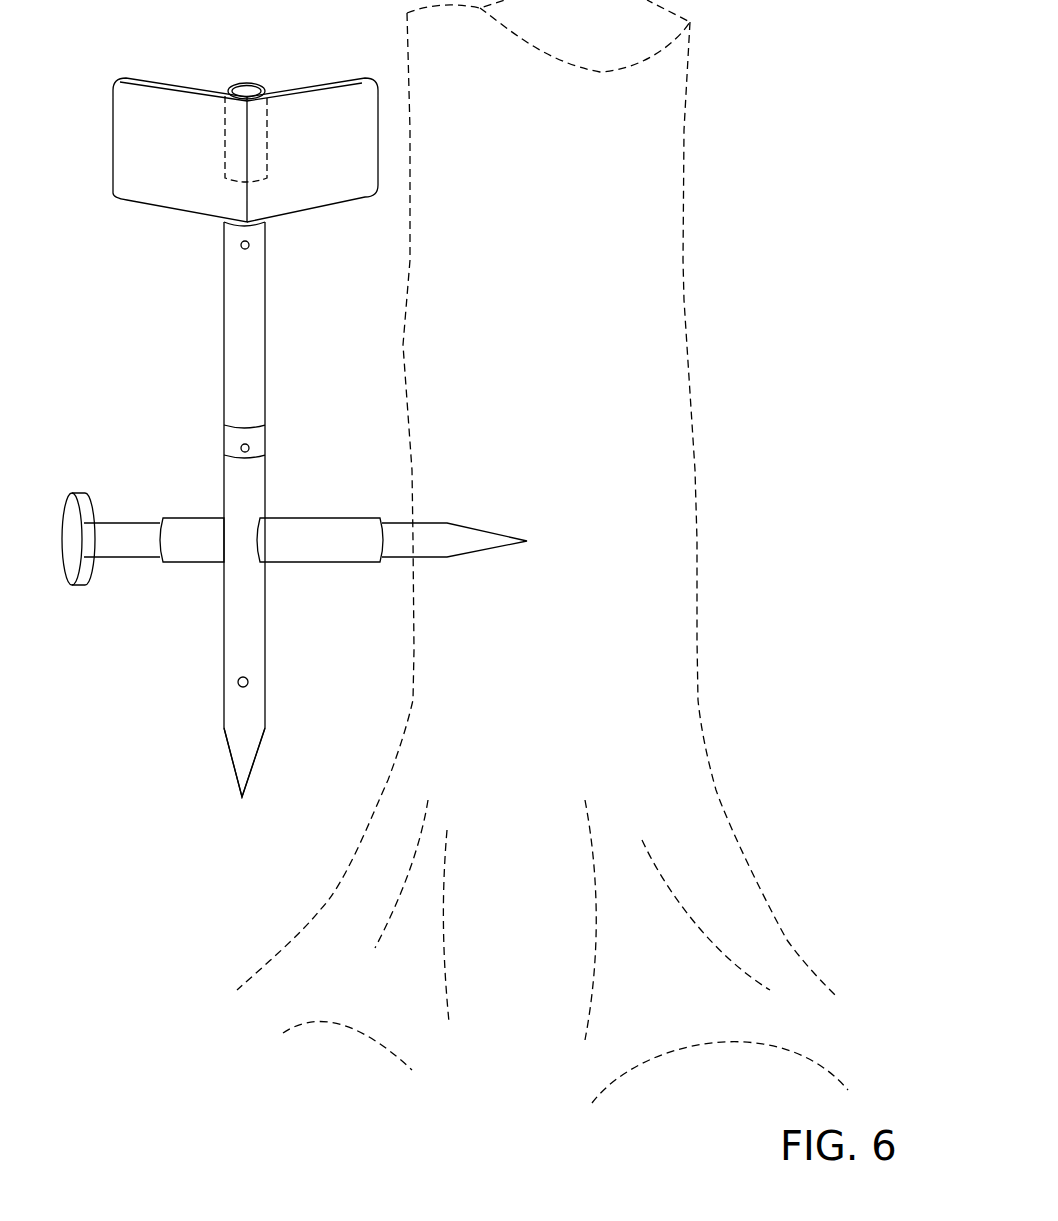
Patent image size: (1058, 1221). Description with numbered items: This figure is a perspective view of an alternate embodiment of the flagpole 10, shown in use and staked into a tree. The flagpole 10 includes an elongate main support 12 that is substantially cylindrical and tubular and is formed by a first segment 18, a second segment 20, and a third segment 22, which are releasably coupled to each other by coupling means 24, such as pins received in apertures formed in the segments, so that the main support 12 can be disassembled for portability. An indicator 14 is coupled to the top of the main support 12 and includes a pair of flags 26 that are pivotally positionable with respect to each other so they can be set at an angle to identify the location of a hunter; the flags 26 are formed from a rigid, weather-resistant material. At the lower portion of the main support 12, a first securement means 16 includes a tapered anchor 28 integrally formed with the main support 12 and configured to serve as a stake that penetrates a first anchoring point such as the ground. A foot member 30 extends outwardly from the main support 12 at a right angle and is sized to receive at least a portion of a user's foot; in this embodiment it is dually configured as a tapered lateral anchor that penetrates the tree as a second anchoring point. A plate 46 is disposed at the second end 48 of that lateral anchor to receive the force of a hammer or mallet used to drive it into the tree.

The flagpole 10 is at (466, 105).
The main support 12 is at (286, 401).
The indicator 14 is at (212, 114).
The first securement means 16 is at (255, 726).
The first segment 18 is at (226, 500).
The second segment 20 is at (250, 295).
The third segment 22 is at (232, 84).
The coupling means 24 is at (268, 135).
The flags 26 is at (158, 153).
The anchor 28 is at (240, 760).
The foot member 30 is at (362, 518).
The plate 46 is at (82, 492).
The second end 48 is at (120, 558).